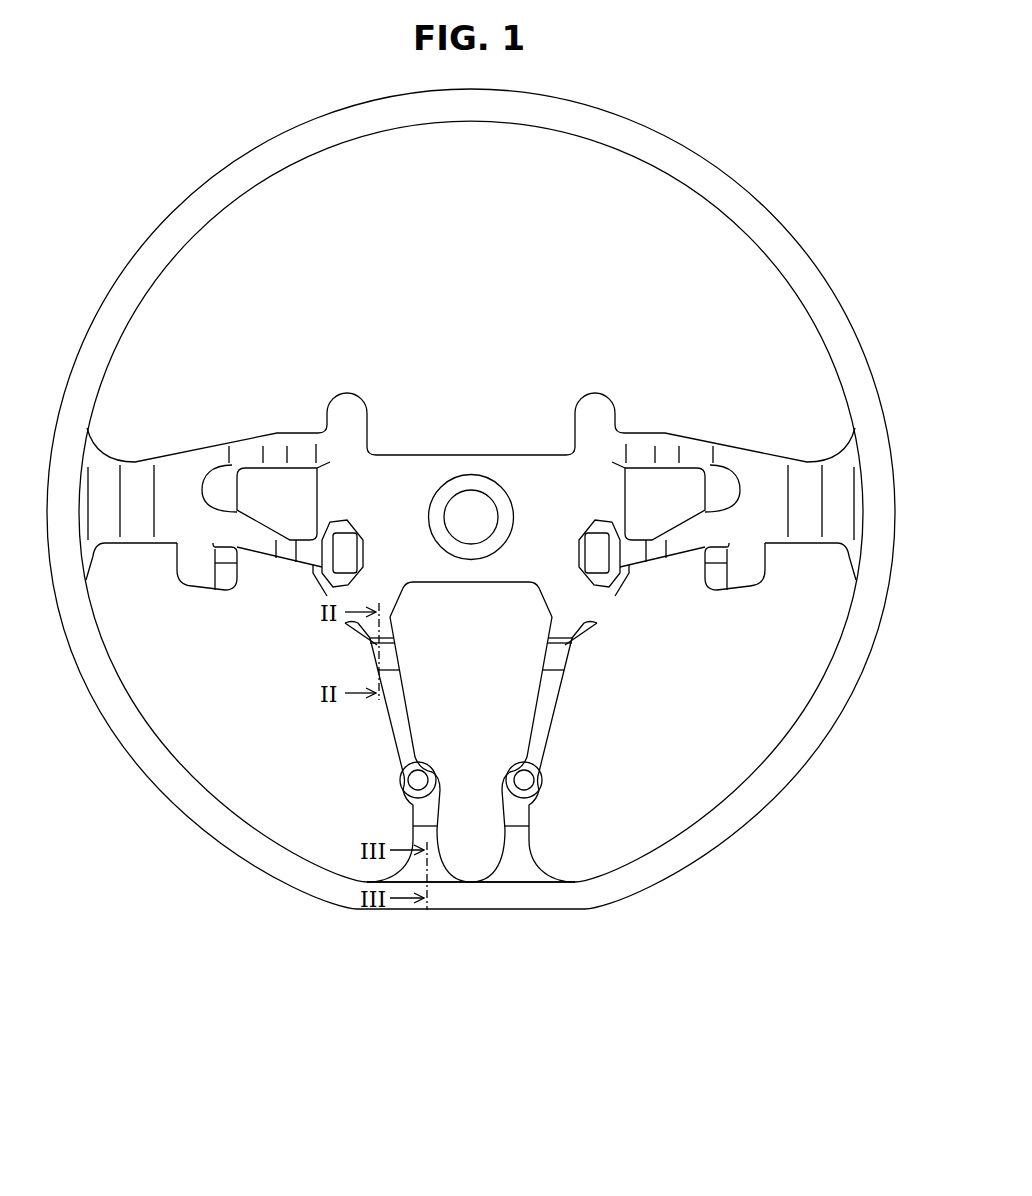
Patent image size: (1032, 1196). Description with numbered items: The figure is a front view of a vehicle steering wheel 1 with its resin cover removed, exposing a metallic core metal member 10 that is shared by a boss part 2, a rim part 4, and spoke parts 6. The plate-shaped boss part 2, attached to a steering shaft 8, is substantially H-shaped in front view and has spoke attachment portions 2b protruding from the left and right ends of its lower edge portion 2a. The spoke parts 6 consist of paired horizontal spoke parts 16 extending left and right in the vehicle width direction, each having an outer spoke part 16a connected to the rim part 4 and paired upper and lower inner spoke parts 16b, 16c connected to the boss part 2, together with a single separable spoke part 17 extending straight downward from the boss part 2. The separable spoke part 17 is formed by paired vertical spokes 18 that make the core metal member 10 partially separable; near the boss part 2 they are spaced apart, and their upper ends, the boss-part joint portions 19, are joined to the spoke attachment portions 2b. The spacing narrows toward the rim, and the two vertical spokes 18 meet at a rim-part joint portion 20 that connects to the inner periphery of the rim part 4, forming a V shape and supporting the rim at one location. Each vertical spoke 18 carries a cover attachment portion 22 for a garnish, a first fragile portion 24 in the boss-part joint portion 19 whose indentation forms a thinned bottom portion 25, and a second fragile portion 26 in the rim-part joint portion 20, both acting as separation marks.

The vehicle steering wheel 1 is at (751, 165).
The boss part 2 is at (531, 479).
The lower edge portion 2a is at (458, 583).
The spoke attachment portion 2b is at (343, 623).
The rim part 4 is at (490, 909).
The spoke parts 6 is at (845, 840).
The steering shaft 8 is at (471, 498).
The core metal member 10 is at (318, 388).
The horizontal spoke part 16 is at (735, 603).
The outer spoke part 16a is at (140, 478).
The upper inner spoke part 16b is at (277, 440).
The lower inner spoke part 16c is at (288, 560).
The separable spoke part 17 is at (780, 873).
The vertical spoke 18 is at (572, 738).
The boss-part joint portion 19 is at (540, 650).
The rim-part joint portion 20 is at (471, 862).
The cover attachment portion 22 is at (400, 780).
The first fragile portion 24 is at (377, 668).
The bottom portion 25 is at (372, 642).
The second fragile portion 26 is at (506, 871).